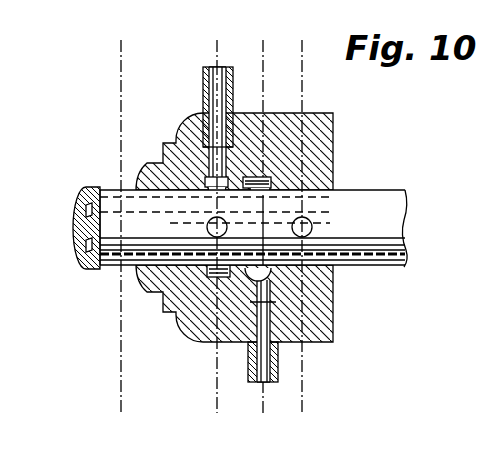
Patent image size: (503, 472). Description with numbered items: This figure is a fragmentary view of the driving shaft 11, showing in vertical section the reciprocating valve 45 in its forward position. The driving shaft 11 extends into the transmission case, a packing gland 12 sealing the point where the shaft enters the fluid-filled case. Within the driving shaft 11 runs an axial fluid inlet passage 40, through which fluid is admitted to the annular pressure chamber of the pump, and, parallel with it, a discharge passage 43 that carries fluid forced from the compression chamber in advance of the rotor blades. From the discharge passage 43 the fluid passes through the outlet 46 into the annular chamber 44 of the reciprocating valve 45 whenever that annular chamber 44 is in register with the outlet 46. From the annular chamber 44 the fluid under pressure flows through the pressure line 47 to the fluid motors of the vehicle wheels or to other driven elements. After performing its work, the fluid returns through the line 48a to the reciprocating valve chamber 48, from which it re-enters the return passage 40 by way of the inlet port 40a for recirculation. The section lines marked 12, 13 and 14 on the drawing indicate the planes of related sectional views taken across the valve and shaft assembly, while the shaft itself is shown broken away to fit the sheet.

The driving shaft 11 is at (357, 200).
The packing gland 12 is at (196, 395).
The section line 13- 13 is at (242, 395).
The section line 14- 14 is at (281, 395).
The axial fluid inlet passage 40 is at (74, 236).
The inlet port 40a is at (207, 228).
The discharge passage 43 is at (77, 201).
The annular chamber 44 is at (251, 279).
The reciprocating valve 45 is at (328, 141).
The outlet 46 is at (268, 193).
The pressure line 47 is at (279, 371).
The reciprocating valve chamber 48 is at (207, 290).
The return line 48a is at (203, 88).